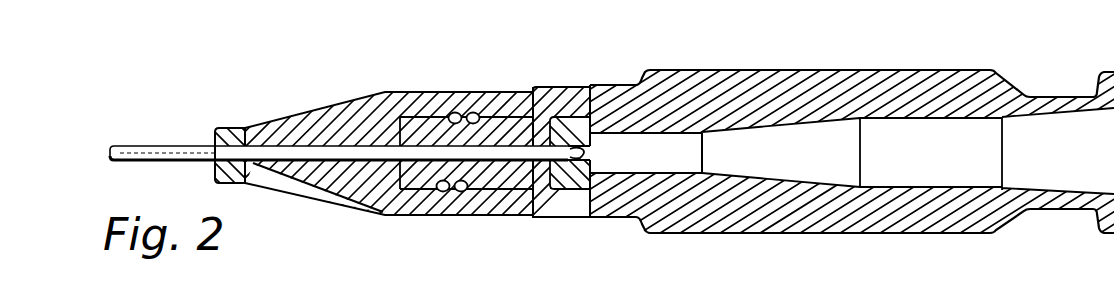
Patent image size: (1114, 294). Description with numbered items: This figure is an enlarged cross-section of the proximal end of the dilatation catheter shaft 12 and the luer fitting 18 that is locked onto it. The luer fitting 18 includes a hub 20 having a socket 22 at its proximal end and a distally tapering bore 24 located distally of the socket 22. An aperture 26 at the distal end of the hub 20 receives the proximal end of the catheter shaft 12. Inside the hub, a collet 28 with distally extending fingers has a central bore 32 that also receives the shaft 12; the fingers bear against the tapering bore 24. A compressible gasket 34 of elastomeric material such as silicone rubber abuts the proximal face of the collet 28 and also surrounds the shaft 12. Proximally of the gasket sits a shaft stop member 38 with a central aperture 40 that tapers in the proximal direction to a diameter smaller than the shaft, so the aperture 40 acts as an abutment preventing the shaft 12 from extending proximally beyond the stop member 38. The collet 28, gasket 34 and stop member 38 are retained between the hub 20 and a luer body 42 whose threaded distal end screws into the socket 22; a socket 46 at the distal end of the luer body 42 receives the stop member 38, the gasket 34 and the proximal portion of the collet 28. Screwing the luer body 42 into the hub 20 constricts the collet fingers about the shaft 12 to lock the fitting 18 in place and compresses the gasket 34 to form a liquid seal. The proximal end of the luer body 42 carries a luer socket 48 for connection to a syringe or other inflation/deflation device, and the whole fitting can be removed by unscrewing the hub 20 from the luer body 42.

The catheter shaft 12 is at (156, 146).
The luer fitting 18 is at (880, 55).
The hub 20 is at (458, 102).
The socket 22 is at (474, 113).
The distally tapering bore 24 is at (334, 133).
The aperture 26 is at (262, 178).
The collet 28 is at (398, 178).
The central bore 32 is at (358, 150).
The compressible gasket 34 is at (541, 195).
The shaft stop member 38 is at (582, 185).
The central aperture 40 is at (577, 148).
The luer body 42 is at (773, 69).
The socket 46 is at (543, 118).
The luer socket 48 is at (1033, 118).